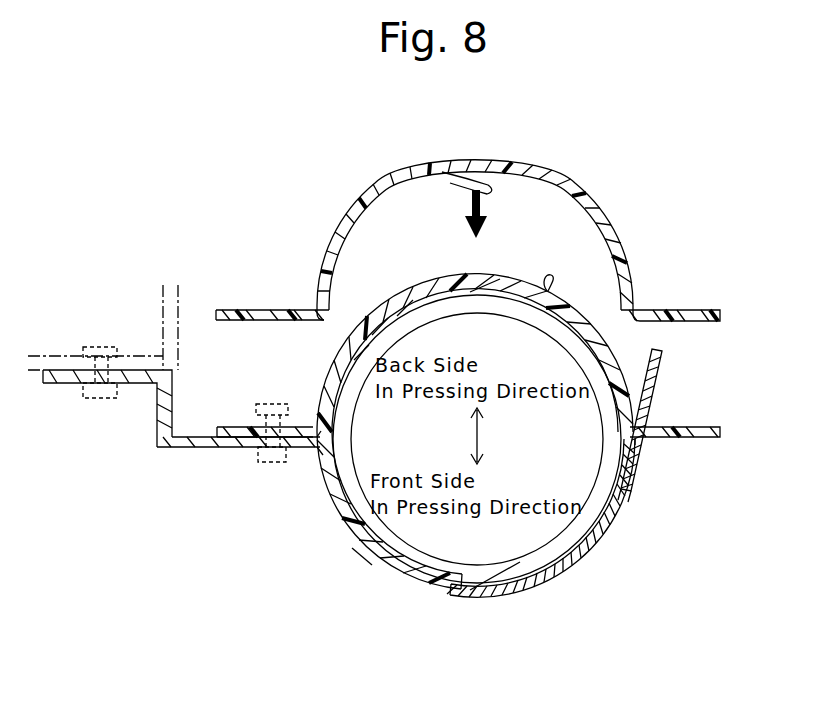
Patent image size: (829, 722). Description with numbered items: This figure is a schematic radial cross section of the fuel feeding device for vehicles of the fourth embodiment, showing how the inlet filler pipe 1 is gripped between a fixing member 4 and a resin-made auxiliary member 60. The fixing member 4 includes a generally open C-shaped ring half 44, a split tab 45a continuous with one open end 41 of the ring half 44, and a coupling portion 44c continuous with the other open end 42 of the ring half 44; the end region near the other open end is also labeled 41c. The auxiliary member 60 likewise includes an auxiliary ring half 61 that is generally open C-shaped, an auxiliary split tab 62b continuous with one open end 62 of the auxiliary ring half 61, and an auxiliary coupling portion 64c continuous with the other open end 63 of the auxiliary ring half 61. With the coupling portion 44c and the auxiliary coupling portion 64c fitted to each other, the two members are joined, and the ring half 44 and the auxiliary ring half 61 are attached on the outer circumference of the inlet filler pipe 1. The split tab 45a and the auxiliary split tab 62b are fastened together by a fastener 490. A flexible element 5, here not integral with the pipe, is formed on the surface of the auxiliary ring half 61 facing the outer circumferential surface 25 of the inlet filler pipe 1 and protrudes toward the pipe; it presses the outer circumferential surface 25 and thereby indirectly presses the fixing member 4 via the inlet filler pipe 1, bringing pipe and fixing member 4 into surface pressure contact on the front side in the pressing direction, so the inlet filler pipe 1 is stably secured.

The inlet filler pipe 1 is at (432, 590).
The fixing member 4 is at (238, 448).
The flexible element 5 is at (482, 275).
The outer circumferential surface 25 is at (548, 291).
The one open end 41 is at (322, 452).
The end portion of holding portion 41c is at (647, 455).
The other open end 42 is at (650, 450).
The ring half 44 is at (363, 552).
The coupling portion 44c is at (660, 394).
The split tab 45a is at (187, 448).
The auxiliary member 60 is at (580, 208).
The auxiliary ring half 61 is at (432, 178).
The one open end 62 is at (325, 297).
The auxiliary split tab 62b is at (252, 310).
The other open end 63 is at (630, 311).
The auxiliary coupling portion 64c is at (698, 311).
The fastener 490 is at (268, 463).